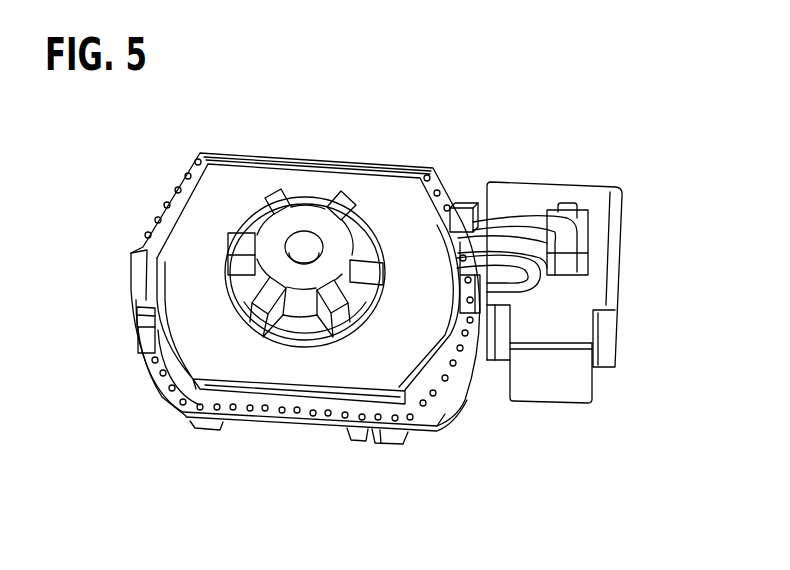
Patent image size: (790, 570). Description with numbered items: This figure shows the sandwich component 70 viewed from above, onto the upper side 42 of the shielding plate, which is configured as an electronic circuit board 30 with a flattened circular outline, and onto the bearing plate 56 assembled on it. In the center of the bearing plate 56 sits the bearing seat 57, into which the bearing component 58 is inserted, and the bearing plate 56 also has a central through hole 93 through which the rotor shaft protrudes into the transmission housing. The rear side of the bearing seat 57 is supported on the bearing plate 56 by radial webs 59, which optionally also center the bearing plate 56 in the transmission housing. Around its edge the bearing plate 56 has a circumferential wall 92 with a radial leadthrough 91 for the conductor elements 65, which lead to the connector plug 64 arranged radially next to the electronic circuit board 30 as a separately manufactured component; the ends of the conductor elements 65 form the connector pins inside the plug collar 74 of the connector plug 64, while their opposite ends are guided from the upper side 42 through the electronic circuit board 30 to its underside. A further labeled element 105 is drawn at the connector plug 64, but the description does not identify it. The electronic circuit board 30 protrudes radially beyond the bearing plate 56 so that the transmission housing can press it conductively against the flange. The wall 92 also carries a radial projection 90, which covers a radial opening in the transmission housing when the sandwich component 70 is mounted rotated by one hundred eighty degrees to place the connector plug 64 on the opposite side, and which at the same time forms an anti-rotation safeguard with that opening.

The electronic circuit board 30 is at (338, 412).
The upper side 42 is at (434, 400).
The bearing plate 56 is at (398, 207).
The bearing seat 57 is at (305, 282).
The bearing component 58 is at (304, 245).
The radial webs 59 is at (270, 191).
The connector plug 64 is at (574, 297).
The conductor elements 65 is at (520, 218).
The sandwich component 70 is at (146, 197).
The plug collar 74 is at (574, 387).
The radial projection 90 is at (140, 280).
The radial leadthrough 91 is at (460, 210).
The circumferential wall 92 is at (210, 392).
The central through hole 93 is at (282, 251).
The connection pin 105 is at (519, 332).